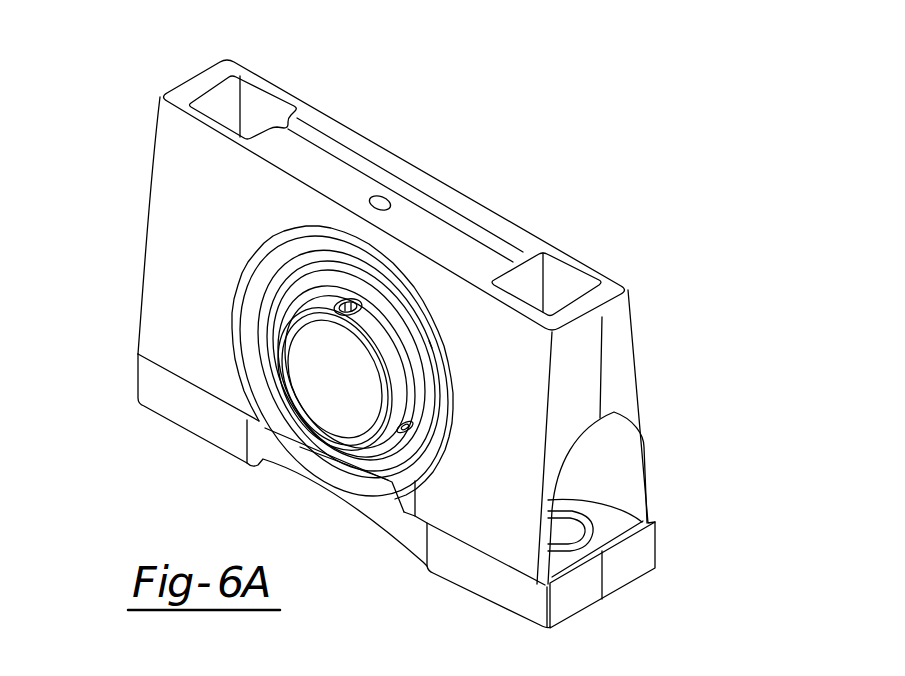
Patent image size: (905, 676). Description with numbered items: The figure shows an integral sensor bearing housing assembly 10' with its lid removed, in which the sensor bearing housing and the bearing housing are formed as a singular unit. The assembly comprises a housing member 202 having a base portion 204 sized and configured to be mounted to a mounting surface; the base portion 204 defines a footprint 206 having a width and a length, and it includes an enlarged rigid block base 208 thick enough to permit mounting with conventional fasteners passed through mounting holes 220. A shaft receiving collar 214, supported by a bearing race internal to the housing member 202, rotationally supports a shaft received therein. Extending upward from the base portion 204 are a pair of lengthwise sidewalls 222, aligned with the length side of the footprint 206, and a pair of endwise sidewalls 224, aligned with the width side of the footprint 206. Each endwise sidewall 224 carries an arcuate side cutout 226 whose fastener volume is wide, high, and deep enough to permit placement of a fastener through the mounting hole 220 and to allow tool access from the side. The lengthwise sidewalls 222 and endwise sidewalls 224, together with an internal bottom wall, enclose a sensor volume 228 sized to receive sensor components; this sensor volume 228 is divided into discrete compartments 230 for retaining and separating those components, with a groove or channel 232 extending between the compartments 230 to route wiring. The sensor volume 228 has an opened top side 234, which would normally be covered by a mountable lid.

The integral sensor bearing housing assembly 10' is at (625, 88).
The housing member 202 is at (633, 317).
The base portion 204 is at (655, 542).
The footprint 206 is at (633, 587).
The enlarged rigid block base 208 is at (533, 617).
The shaft receiving collar 214 is at (332, 443).
The mounting hole 220 is at (587, 537).
The lengthwise sidewall 222 is at (178, 184).
The endwise sidewall 224 is at (163, 94).
The side cutout 226 is at (637, 465).
The sensor volume 228 is at (257, 108).
The compartment 230 is at (247, 95).
The channel 232 is at (325, 145).
The opened top side 234 is at (483, 204).